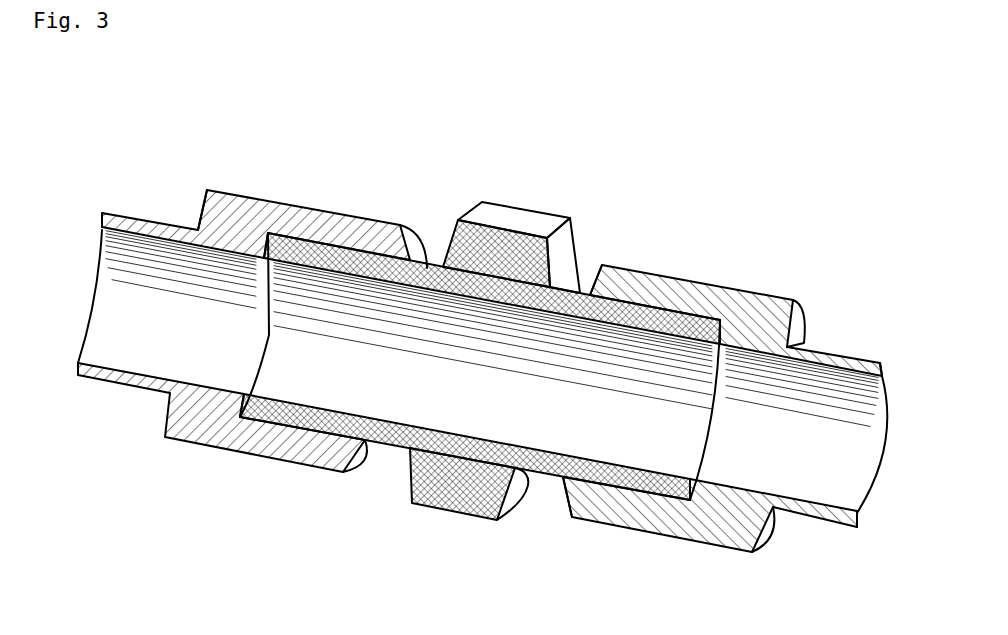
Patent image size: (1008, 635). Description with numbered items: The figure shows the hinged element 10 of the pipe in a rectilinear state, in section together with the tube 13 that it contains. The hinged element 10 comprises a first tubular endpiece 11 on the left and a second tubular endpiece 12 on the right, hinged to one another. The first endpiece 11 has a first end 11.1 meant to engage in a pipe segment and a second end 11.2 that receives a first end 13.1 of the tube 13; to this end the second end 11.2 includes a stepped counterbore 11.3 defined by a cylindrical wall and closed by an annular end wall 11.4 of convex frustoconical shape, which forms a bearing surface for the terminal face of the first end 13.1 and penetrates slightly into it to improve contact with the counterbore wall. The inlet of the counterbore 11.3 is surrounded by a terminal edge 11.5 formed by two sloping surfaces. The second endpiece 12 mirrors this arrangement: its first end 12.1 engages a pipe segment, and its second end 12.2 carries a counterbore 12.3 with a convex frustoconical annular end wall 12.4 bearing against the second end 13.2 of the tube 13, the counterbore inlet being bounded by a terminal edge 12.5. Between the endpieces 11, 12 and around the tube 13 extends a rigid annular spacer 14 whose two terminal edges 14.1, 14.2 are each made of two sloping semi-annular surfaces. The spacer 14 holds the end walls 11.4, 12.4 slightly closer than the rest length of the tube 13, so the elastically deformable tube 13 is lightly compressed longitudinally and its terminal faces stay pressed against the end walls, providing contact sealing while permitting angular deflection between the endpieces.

The hinged element 10 is at (612, 160).
The first tubular endpiece 11 is at (261, 118).
The first end of first endpiece 11.1 is at (145, 222).
The second end of first endpiece 11.2 is at (325, 222).
The counterbore of first endpiece 11.3 is at (378, 255).
The annular end wall of first endpiece 11.4 is at (283, 218).
The terminal edge of first endpiece 11.5 is at (352, 468).
The second tubular endpiece 12 is at (815, 232).
The first end of second endpiece 12.1 is at (848, 352).
The second end of second endpiece 12.2 is at (748, 292).
The counterbore of second endpiece 12.3 is at (690, 320).
The annular end wall of second endpiece 12.4 is at (665, 522).
The terminal edge of second endpiece 12.5 is at (562, 486).
The tube 13 is at (450, 470).
The first end of tube 13.1 is at (248, 440).
The second end of tube 13.2 is at (626, 492).
The spacer 14 is at (527, 198).
The first terminal edge of spacer 14.1 is at (405, 484).
The second terminal edge of spacer 14.2 is at (530, 475).